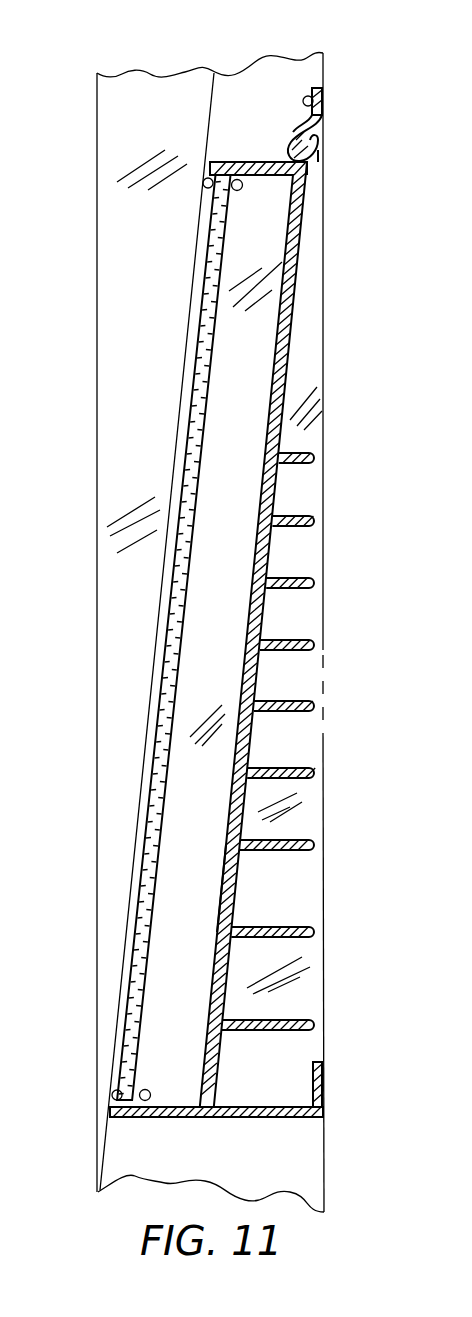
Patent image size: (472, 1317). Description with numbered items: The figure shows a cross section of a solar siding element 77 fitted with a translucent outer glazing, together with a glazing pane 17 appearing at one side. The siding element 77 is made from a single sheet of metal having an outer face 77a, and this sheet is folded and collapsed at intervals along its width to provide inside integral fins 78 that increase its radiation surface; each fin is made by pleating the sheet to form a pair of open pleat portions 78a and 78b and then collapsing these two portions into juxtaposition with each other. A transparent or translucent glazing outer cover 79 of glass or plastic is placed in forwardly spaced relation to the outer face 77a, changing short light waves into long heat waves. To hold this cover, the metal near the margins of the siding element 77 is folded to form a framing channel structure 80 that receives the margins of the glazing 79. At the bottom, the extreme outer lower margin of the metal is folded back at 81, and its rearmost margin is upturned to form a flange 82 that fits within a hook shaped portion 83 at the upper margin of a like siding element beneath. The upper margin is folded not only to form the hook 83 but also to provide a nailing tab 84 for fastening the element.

The panel 17 is at (397, 632).
The solar siding element 77 is at (284, 395).
The outer face 77a is at (226, 864).
The integral fins 78 is at (310, 520).
The open pleat portion 78a is at (296, 640).
The open pleat portion 78b is at (297, 656).
The glazing outer cover 79 is at (178, 665).
The framing channel structure 80 is at (208, 158).
The folded back lower margin 81 is at (247, 1117).
The flange 82 is at (322, 1080).
The hook shaped portion 83 is at (323, 143).
The nailing tab 84 is at (320, 97).